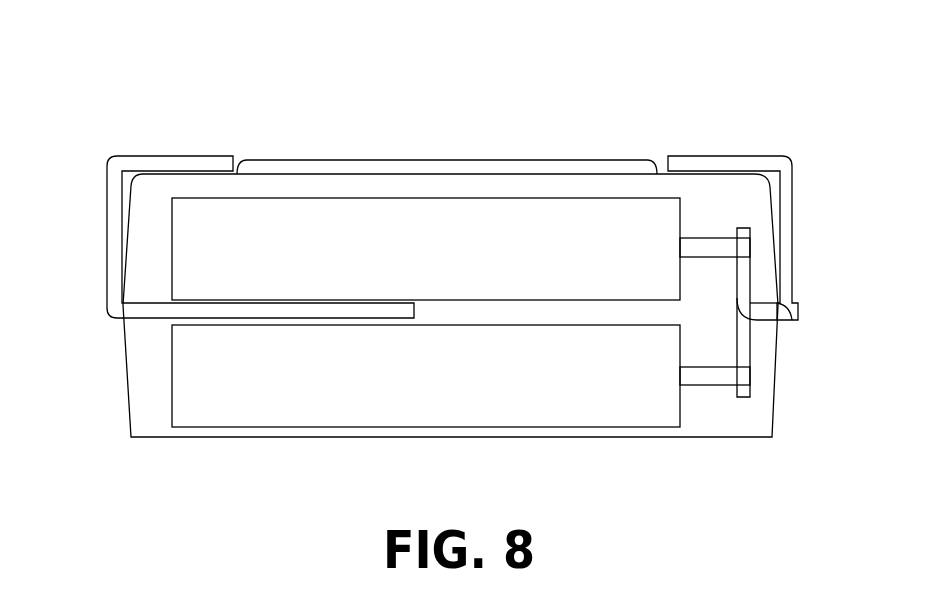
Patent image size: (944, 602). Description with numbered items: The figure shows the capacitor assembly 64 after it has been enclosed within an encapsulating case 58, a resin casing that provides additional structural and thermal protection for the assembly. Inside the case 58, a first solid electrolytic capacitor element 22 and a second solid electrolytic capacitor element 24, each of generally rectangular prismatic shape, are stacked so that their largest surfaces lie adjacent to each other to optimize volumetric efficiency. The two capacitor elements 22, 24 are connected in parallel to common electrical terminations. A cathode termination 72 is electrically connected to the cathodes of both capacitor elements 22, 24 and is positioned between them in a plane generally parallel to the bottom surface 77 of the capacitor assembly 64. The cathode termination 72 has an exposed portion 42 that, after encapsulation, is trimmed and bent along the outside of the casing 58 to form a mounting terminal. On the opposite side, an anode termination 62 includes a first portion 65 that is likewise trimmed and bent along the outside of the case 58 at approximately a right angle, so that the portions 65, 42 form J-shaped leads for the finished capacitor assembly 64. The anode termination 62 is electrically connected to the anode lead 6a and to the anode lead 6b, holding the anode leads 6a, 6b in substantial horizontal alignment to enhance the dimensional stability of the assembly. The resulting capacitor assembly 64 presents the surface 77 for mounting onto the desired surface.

The encapsulating case 58 is at (150, 408).
The bottom surface 77 is at (393, 158).
The capacitor assembly 64 is at (299, 136).
The cathode termination 72 is at (103, 153).
The exposed portion 42 is at (107, 257).
The anode termination 62 is at (797, 155).
The first portion 65 is at (793, 223).
The second solid electrolytic capacitor element 24 is at (600, 215).
The first solid electrolytic capacitor element 22 is at (632, 405).
The anode lead 6b is at (690, 250).
The anode lead 6a is at (690, 377).